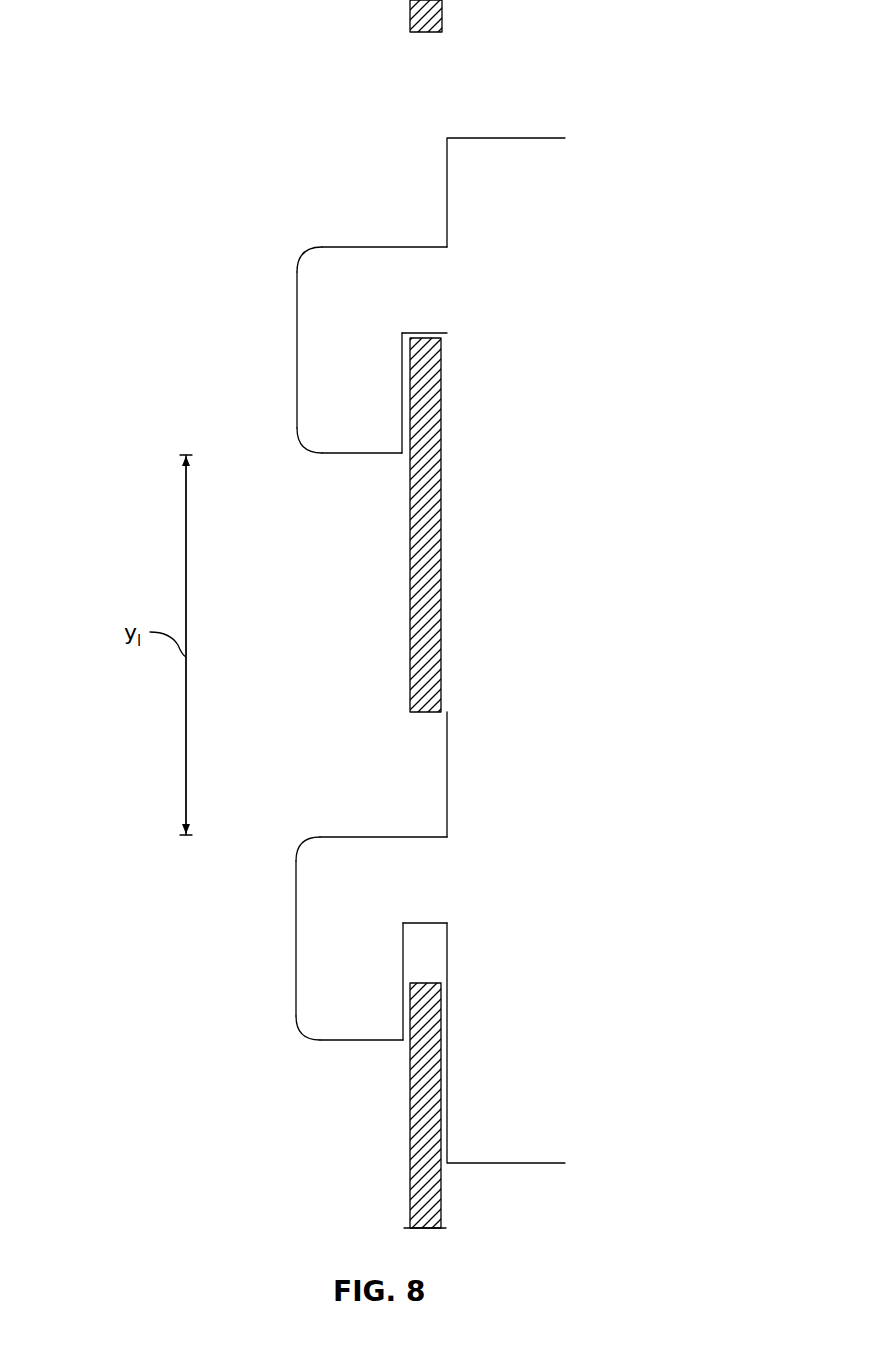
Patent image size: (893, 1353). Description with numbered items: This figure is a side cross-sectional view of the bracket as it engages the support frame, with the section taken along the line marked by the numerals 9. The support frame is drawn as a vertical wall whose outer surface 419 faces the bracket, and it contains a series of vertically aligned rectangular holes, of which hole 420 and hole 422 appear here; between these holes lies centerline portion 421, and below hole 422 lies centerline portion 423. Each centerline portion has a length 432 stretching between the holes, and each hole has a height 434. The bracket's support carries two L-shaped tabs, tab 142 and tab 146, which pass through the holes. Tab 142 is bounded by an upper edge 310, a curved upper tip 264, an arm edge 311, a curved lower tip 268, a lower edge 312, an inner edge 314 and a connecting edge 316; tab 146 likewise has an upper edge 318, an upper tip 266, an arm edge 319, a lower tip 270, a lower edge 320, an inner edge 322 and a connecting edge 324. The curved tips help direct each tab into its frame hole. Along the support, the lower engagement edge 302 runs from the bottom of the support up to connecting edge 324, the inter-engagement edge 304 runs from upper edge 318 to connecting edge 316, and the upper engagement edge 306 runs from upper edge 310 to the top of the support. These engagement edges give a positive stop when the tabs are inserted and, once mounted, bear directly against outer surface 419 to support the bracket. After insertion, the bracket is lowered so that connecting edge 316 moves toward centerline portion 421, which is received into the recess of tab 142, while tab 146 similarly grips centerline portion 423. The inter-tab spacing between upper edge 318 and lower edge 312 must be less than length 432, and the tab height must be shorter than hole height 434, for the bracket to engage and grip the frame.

The section line 9- 9 is at (430, 48).
The tab 142 is at (383, 280).
The tab 146 is at (383, 868).
The upper tip 264 is at (310, 245).
The upper tip 266 is at (310, 835).
The lower tip 268 is at (306, 450).
The lower tip 270 is at (310, 1036).
The lower engagement edge 302 is at (447, 1092).
The inter-engagement edge 304 is at (447, 780).
The upper engagement edge 306 is at (447, 195).
The upper edge 310 is at (388, 247).
The arm edge 311 is at (297, 358).
The lower edge 312 is at (364, 455).
The inner edge 314 is at (402, 405).
The connecting edge 316 is at (425, 333).
The upper edge 318 is at (388, 837).
The arm edge 319 is at (296, 948).
The lower edge 320 is at (364, 1042).
The inner edge 322 is at (403, 993).
The connecting edge 324 is at (425, 923).
The outer surface 419 is at (442, 1188).
The hole 420 is at (385, 185).
The centerline portion 421 is at (412, 596).
The hole 422 is at (388, 756).
The centerline portion 423 is at (412, 1129).
The length 432 is at (513, 338).
The height 434 is at (114, 983).